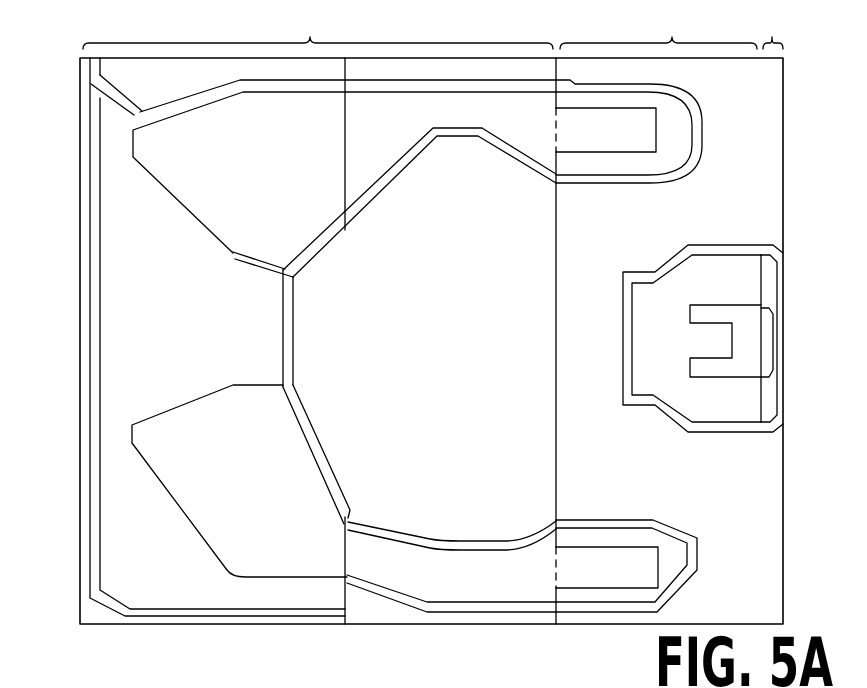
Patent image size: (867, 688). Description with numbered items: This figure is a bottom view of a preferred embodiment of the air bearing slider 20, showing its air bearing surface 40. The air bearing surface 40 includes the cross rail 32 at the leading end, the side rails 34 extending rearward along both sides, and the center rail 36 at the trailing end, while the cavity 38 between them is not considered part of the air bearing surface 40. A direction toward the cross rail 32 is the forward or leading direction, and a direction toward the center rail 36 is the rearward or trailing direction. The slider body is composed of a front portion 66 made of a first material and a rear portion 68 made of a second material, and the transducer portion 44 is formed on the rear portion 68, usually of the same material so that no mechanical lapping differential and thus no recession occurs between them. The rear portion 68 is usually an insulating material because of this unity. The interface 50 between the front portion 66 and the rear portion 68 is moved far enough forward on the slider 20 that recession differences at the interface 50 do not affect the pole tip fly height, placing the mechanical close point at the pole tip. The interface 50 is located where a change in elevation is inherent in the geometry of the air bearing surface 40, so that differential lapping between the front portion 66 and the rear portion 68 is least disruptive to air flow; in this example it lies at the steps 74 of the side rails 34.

The air bearing slider 20 is at (805, 190).
The cross rail 32 is at (108, 306).
The side rails 34 is at (644, 133).
The center rail 36 is at (727, 275).
The cavity 38 is at (441, 347).
The air bearing surface 40 is at (146, 236).
The transducer portion 44 is at (778, 27).
The interface 50 is at (556, 202).
The front portion 66 is at (318, 27).
The rear portion 68 is at (658, 27).
The steps 74 is at (560, 160).